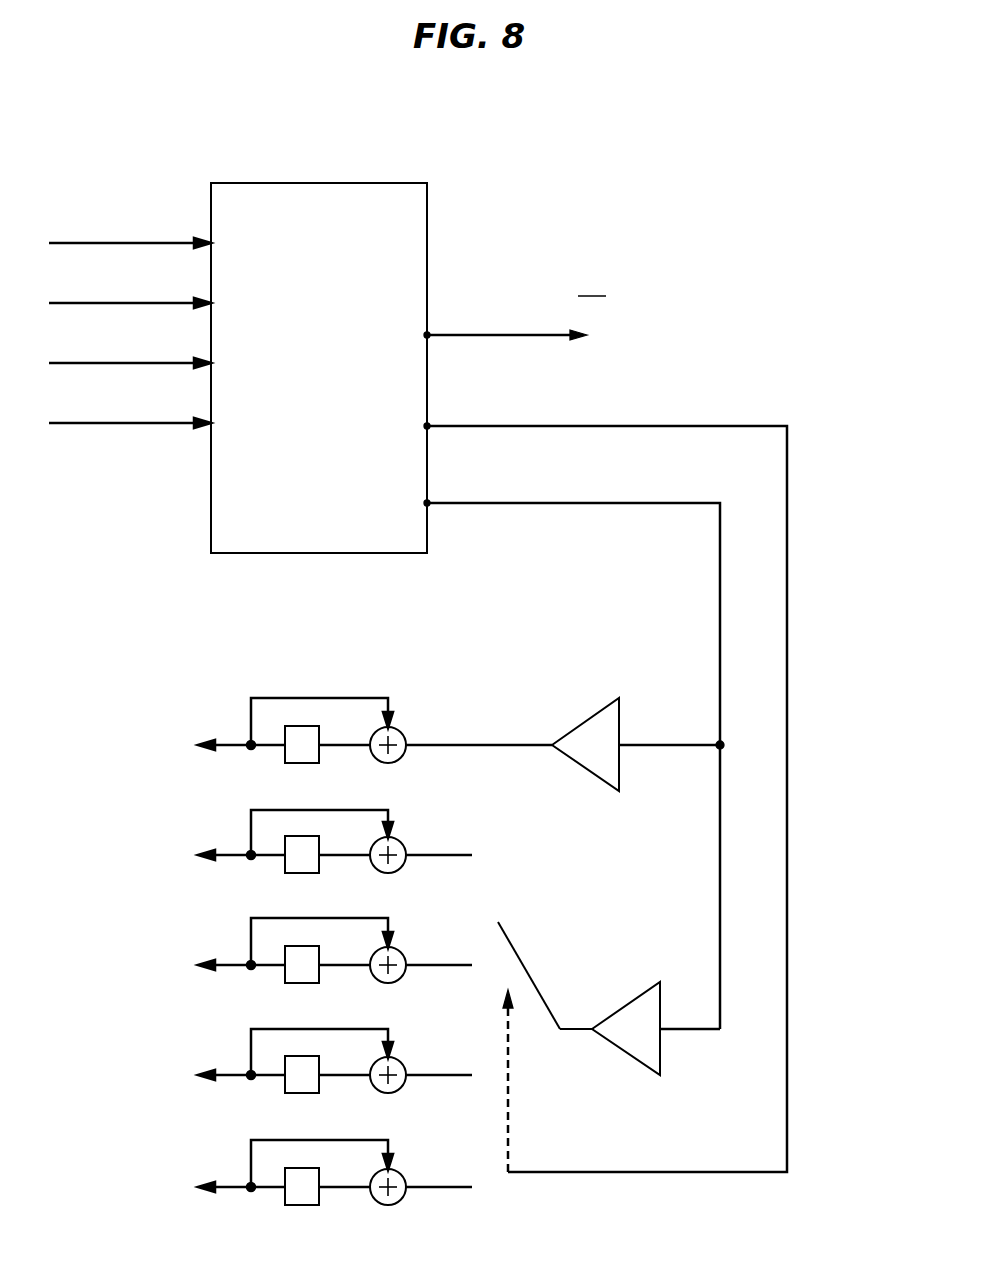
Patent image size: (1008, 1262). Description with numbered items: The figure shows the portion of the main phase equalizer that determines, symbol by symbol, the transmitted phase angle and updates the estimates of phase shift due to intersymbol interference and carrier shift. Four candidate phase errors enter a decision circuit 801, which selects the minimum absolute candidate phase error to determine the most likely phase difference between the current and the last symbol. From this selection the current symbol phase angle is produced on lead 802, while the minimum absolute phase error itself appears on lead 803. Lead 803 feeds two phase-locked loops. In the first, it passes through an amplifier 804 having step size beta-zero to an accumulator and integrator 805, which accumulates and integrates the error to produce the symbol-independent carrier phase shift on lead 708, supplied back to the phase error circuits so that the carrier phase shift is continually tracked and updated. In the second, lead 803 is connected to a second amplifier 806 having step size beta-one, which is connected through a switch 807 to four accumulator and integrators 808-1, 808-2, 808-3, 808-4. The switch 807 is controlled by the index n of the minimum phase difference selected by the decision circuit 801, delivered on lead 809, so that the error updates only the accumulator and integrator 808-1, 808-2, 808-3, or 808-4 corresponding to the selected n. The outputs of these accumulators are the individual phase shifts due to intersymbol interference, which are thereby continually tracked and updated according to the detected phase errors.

The decision circuit 801 is at (428, 203).
The lead 802 is at (484, 333).
The lead 803 is at (563, 505).
The amplifier 804 is at (581, 766).
The accumulator and integrator 805 is at (338, 676).
The second amplifier 806 is at (628, 1063).
The switch 807 is at (517, 950).
The accumulator and integrator 808-1 is at (457, 801).
The accumulator and integrator 808-2 is at (457, 911).
The accumulator and integrator 808-3 is at (457, 1022).
The accumulator and integrator 808-4 is at (457, 1134).
The lead 809 is at (788, 728).
The lead 708 is at (242, 747).